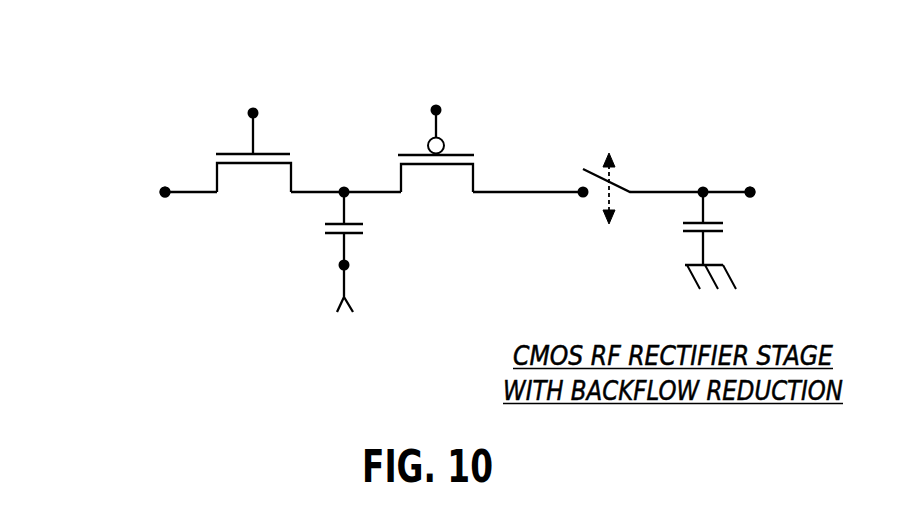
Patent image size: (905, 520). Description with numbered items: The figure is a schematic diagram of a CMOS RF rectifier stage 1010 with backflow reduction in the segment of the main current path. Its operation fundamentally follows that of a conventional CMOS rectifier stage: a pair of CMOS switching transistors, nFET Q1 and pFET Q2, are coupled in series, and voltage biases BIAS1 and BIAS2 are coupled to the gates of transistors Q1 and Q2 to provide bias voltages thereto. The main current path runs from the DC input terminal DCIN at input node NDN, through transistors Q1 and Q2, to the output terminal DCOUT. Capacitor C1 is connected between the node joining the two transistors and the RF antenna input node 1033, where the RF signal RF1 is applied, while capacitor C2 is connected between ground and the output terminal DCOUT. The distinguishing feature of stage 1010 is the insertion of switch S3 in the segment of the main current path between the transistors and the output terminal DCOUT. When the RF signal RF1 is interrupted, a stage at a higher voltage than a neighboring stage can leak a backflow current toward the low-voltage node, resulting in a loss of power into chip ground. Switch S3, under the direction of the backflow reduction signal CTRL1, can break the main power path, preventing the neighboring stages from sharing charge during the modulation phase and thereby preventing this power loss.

The CMOS RF rectifier stage 1010 is at (436, 164).
The RF antenna input node 1033 is at (302, 301).
The nFET switching transistor Q1 is at (253, 153).
The pFET switching transistor Q2 is at (436, 151).
The capacitor C1 is at (360, 228).
The capacitor C2 is at (719, 240).
The switch S3 is at (641, 178).
The backflow reduction signal CTRL1 is at (610, 210).
The voltage bias BIAS1 is at (252, 94).
The voltage bias BIAS2 is at (432, 93).
The DC input terminal DCIN is at (139, 191).
The output terminal DCOUT is at (794, 191).
The input node NDN is at (165, 195).
The RF signal RF1 is at (350, 304).